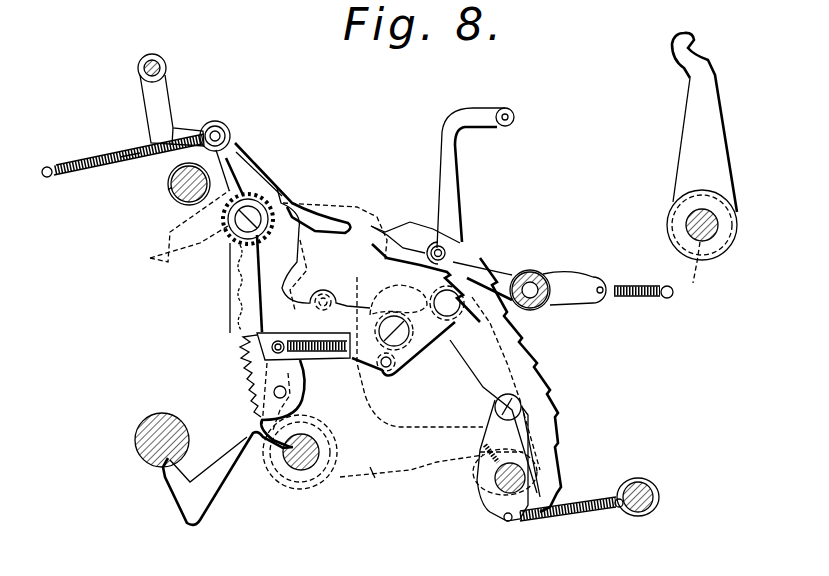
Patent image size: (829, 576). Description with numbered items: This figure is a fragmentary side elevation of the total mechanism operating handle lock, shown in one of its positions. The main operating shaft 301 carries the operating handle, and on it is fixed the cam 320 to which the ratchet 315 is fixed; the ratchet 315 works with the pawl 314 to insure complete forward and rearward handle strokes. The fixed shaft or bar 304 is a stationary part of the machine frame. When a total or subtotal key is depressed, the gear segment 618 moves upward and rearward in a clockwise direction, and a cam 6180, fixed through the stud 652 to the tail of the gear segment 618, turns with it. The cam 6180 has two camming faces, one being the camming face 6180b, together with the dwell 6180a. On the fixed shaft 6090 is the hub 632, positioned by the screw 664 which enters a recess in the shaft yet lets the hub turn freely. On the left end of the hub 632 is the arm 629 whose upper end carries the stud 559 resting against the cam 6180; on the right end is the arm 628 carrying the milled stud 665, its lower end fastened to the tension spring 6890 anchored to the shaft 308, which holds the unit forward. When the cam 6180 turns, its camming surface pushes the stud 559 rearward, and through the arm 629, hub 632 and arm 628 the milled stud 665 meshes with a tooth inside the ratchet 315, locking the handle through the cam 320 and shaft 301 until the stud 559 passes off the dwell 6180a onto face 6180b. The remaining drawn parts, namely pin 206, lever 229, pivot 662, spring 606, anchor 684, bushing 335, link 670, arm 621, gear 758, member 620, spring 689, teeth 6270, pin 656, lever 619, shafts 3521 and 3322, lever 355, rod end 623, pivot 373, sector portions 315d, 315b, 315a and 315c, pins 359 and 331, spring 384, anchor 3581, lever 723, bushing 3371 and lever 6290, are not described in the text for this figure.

The pivot pin 206 is at (166, 68).
The lever 229 is at (155, 101).
The pivot 662 is at (224, 133).
The spring 606 is at (50, 165).
The spring anchor 684 is at (133, 162).
The fixed shaft or bar 304 is at (178, 200).
The bushing 335 is at (168, 190).
The link 670 is at (222, 208).
The lever arm 621 is at (273, 190).
The gear 758 is at (228, 233).
The gear segment 618 is at (215, 340).
The rack lever 620 is at (235, 280).
The spring 689 is at (326, 360).
The ratchet teeth 6270 is at (243, 373).
The pin 656 is at (287, 396).
The lever 619 is at (227, 430).
The shaft 3521 is at (140, 433).
The shaft 3322 is at (297, 493).
The main operating shaft 301 is at (297, 468).
The cam 320 is at (368, 480).
The stud 652 is at (410, 276).
The camming face 6180b is at (386, 200).
The lever 355 is at (458, 332).
The cam 6180 is at (433, 190).
The dwell 6180a is at (422, 223).
The rod end 623 is at (514, 117).
The pivot 373 is at (445, 248).
The ratchet 315 is at (513, 340).
The sector arm 315d is at (445, 252).
The sector edge 315b is at (500, 348).
The stud 559 is at (517, 345).
The pin 359 is at (550, 306).
The hub 331 is at (530, 271).
The pawl 314 is at (573, 282).
The spring 384 is at (650, 268).
The spring anchor 3581 is at (672, 298).
The lever 723 is at (690, 135).
The bushing 3371 is at (697, 283).
The fixed shaft 6090 is at (505, 485).
The milled stud 665 is at (512, 405).
The hub 632 is at (533, 477).
The arm 628 is at (478, 449).
The screw 664 is at (483, 462).
The arm 629 is at (480, 403).
The sector edge 315a is at (558, 412).
The tension spring 6890 is at (558, 527).
The lever 6290 is at (645, 481).
The shaft 308 is at (660, 498).
The sector edge 315c is at (513, 523).